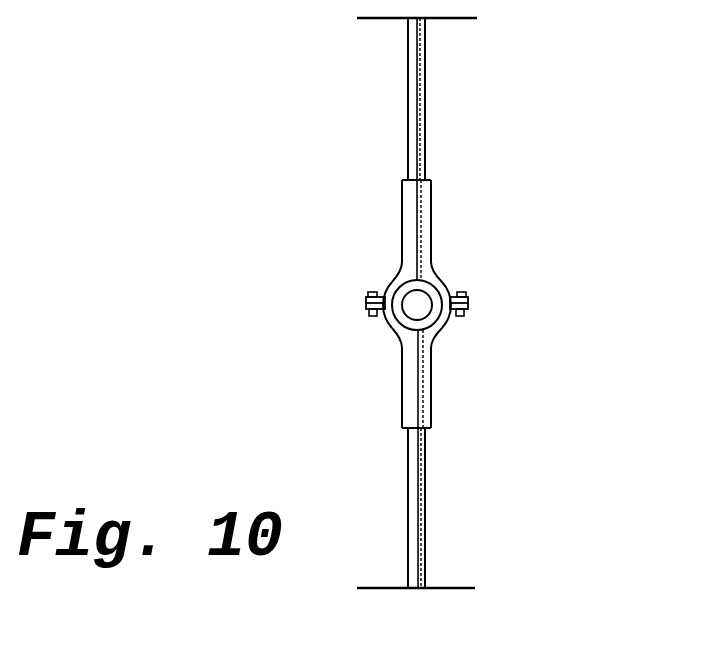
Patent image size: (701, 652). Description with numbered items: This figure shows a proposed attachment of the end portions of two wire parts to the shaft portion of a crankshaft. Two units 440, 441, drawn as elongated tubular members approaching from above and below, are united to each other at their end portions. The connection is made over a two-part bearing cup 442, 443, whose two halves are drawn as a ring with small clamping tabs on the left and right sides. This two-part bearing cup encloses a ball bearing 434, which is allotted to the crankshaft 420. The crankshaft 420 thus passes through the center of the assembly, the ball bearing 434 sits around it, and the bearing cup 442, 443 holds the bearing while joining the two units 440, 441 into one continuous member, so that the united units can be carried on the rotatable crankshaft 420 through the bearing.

The unit 440 is at (413, 102).
The unit 441 is at (417, 529).
The crankshaft 420 is at (416, 311).
The ball bearing 434 is at (428, 288).
The bearing cup part 442 is at (393, 283).
The bearing cup part 443 is at (393, 328).